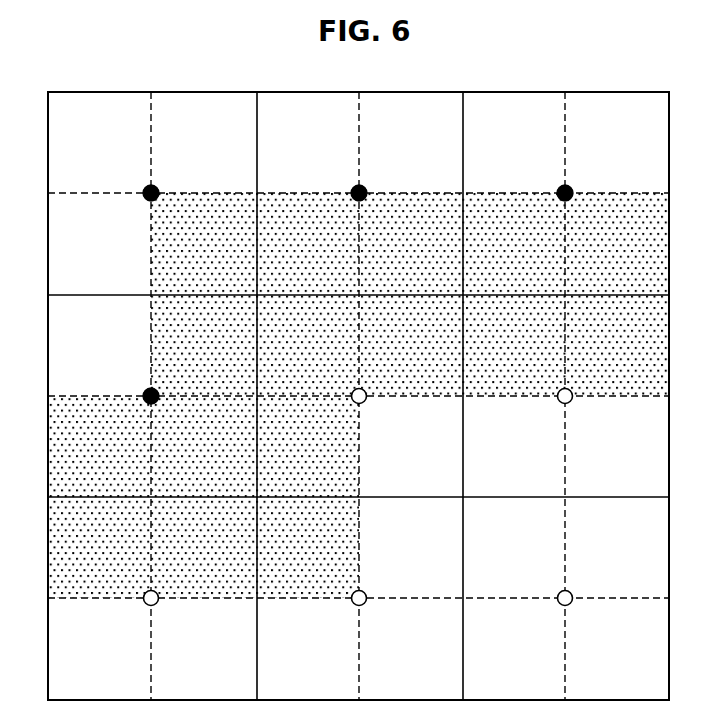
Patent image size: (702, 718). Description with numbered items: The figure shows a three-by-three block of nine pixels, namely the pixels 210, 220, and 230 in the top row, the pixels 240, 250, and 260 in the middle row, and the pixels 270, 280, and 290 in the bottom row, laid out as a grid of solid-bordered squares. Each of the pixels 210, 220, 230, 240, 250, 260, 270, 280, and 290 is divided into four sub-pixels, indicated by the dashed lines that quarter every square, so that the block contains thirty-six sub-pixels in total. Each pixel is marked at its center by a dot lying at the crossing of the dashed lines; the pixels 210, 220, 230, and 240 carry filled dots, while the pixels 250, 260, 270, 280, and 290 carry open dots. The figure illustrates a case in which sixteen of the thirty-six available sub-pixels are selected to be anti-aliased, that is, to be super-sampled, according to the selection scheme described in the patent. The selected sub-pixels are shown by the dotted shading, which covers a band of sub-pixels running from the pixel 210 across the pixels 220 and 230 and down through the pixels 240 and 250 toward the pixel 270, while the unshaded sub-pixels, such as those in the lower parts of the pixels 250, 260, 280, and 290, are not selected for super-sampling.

The pixel 210 is at (178, 177).
The pixel 220 is at (386, 177).
The pixel 230 is at (592, 177).
The pixel 240 is at (178, 380).
The pixel 250 is at (386, 380).
The pixel 260 is at (593, 380).
The pixel 270 is at (178, 582).
The pixel 280 is at (386, 582).
The pixel 290 is at (593, 582).